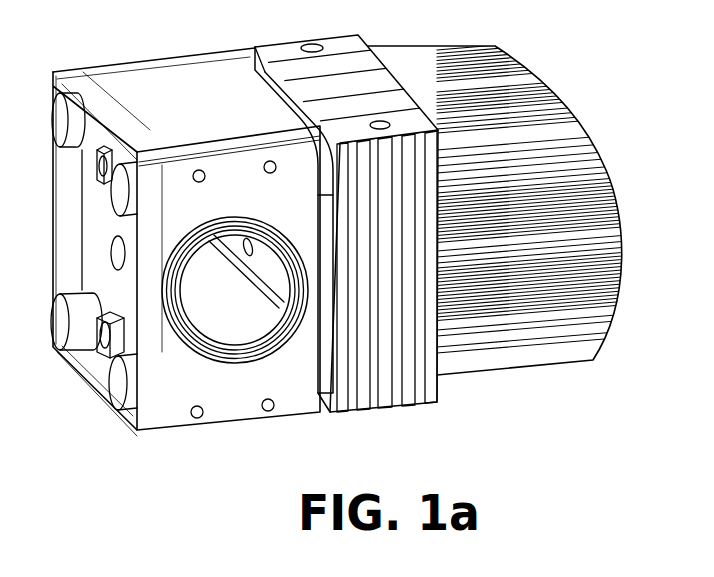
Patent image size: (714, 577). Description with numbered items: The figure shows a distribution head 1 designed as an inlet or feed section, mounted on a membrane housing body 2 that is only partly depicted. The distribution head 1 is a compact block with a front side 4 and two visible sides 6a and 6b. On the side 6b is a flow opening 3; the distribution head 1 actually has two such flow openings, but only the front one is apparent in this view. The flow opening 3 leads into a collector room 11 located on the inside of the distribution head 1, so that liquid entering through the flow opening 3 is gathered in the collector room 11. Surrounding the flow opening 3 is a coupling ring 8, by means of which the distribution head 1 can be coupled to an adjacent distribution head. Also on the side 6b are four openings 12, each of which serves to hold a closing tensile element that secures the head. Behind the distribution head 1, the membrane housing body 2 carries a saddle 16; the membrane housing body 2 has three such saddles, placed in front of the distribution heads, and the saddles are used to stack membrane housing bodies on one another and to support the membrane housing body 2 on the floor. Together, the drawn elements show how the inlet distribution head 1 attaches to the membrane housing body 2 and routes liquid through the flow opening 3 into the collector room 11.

The distribution head 1 is at (185, 60).
The membrane housing body 2 is at (508, 98).
The flow opening 3 is at (253, 310).
The front side 4 is at (90, 238).
The side 6a is at (133, 92).
The side 6b is at (131, 424).
The coupling ring 8 is at (167, 350).
The collector room 11 is at (233, 307).
The openings 12 is at (268, 161).
The saddle 16 is at (337, 47).